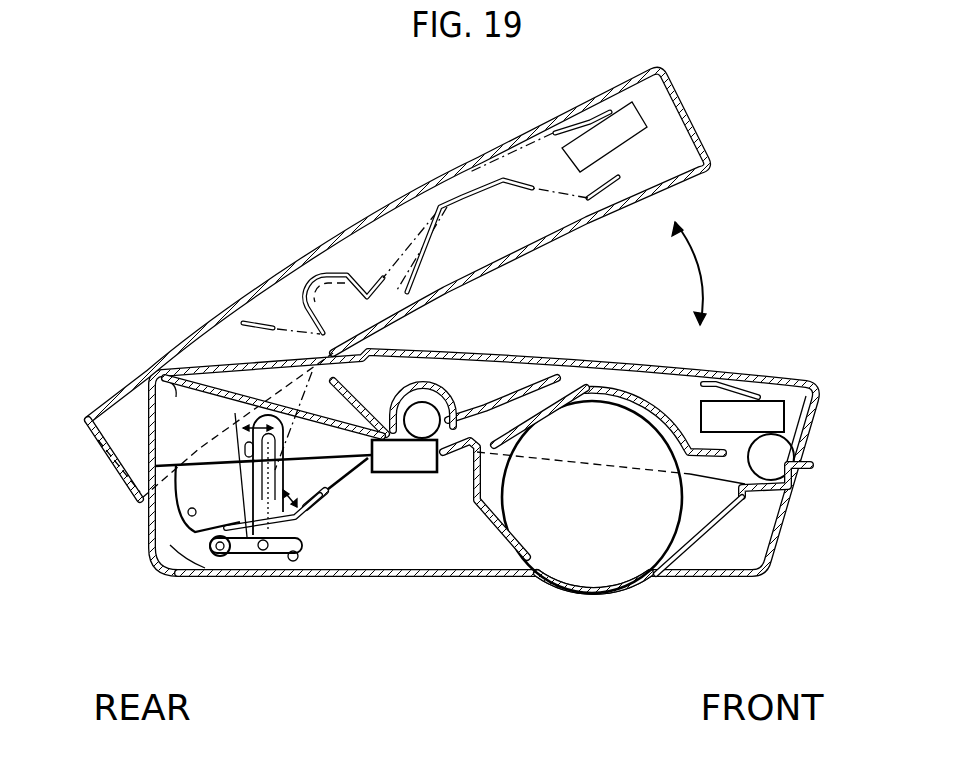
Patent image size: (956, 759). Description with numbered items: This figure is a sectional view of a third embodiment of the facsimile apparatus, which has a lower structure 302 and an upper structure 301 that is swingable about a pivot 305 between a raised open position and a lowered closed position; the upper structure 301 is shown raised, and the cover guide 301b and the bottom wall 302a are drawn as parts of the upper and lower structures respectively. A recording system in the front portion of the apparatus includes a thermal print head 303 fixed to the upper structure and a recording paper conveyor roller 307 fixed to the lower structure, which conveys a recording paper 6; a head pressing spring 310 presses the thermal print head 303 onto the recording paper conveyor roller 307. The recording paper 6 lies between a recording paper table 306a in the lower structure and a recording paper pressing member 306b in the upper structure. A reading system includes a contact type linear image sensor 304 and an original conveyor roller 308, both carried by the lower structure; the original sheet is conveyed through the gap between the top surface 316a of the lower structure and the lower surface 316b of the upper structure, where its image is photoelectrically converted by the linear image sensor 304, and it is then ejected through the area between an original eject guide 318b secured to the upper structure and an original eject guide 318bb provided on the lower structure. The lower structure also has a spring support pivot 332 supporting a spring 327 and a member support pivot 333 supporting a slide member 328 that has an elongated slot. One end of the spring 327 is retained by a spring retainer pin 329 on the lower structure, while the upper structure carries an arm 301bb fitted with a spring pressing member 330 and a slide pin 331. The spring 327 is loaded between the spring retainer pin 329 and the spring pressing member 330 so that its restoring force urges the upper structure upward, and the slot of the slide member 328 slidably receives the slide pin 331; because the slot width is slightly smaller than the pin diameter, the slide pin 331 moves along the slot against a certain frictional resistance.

The recording paper 6 is at (634, 548).
The upper structure 301 is at (366, 242).
The cover guide 301b is at (457, 163).
The arm 301bb is at (158, 562).
The lower structure 302 is at (408, 553).
The case bottom wall 302a is at (507, 580).
The thermal print head 303 is at (772, 410).
The contact type linear image sensor 304 is at (423, 466).
The pivot 305 is at (153, 521).
The recording paper table 306a is at (607, 596).
The recording paper pressing member 306b is at (626, 395).
The recording paper conveyor roller 307 is at (771, 470).
The original conveyor roller 308 is at (422, 412).
The head pressing spring 310 is at (704, 383).
The top surface of the lower structure 316a is at (190, 383).
The lower surface of the upper structure 316b is at (330, 376).
The original eject guide 318b is at (530, 388).
The original eject guide 318bb is at (567, 392).
The spring 327 is at (221, 557).
The slide member 328 is at (262, 413).
The spring retainer pin 329 is at (300, 562).
The spring pressing member 330 is at (338, 510).
The slide pin 331 is at (284, 555).
The spring support pivot 332 is at (185, 572).
The member support pivot 333 is at (256, 553).